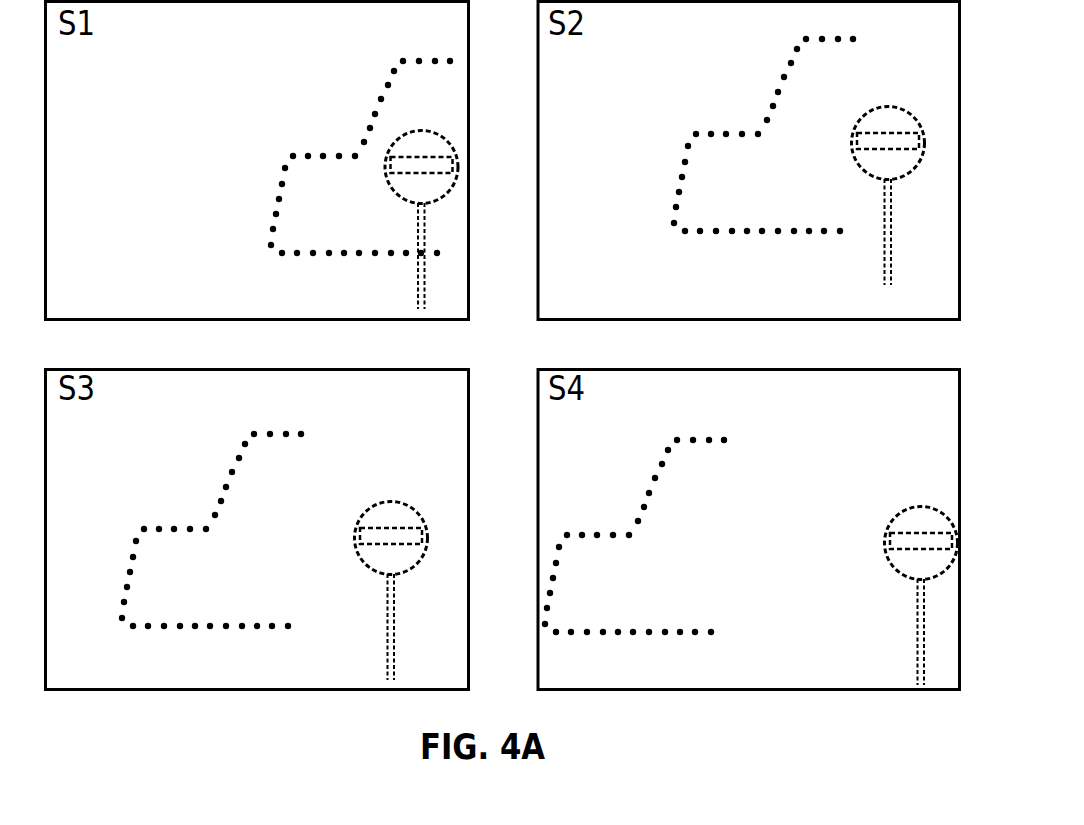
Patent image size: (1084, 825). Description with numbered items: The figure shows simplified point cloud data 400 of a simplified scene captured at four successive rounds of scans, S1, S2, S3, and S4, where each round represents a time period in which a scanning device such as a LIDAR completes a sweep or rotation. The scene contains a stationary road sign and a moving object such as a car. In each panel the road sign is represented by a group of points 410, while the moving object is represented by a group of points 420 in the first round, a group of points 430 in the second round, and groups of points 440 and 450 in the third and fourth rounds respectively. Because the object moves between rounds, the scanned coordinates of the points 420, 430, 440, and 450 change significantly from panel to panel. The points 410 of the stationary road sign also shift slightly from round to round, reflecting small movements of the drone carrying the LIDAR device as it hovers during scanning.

The point cloud data 400 is at (503, 346).
The group of points associated with the road sign 410 is at (423, 131).
The group of points associated with a portion of the moving object 420 is at (370, 113).
The group of points associated with the portion of the moving object 430 is at (768, 106).
The group of points associated with the portion of the moving object 440 is at (222, 488).
The group of points associated with the portion of the moving object 450 is at (645, 494).